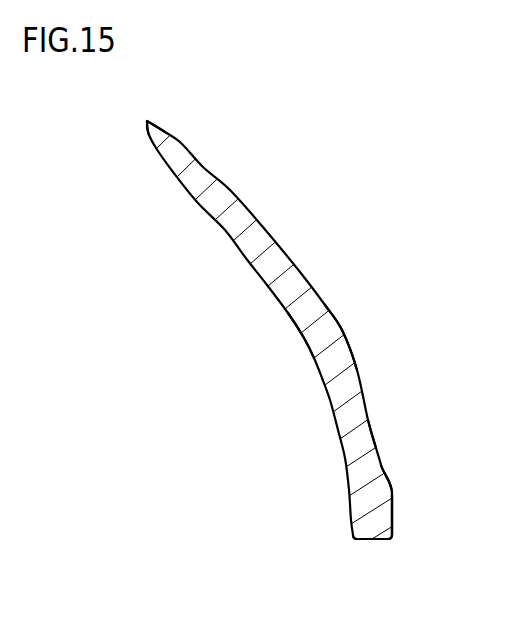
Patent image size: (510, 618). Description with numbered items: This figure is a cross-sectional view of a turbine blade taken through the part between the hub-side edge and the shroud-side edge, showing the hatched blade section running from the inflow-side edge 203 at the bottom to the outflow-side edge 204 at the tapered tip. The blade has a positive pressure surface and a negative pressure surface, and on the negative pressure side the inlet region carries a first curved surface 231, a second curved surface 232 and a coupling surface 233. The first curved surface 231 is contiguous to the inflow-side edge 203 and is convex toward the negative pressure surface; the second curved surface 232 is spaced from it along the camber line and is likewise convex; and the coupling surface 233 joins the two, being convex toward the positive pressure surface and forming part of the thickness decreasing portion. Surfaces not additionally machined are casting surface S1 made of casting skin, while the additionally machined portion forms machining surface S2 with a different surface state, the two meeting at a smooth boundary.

The outflow-side edge 204 is at (147, 120).
The inflow-side edge 203 is at (372, 540).
The second curved surface 232 is at (371, 433).
The coupling surface 233 is at (383, 469).
The first curved surface 231 is at (395, 500).
The casting surface S1 is at (302, 336).
The machining surface S2 is at (345, 339).